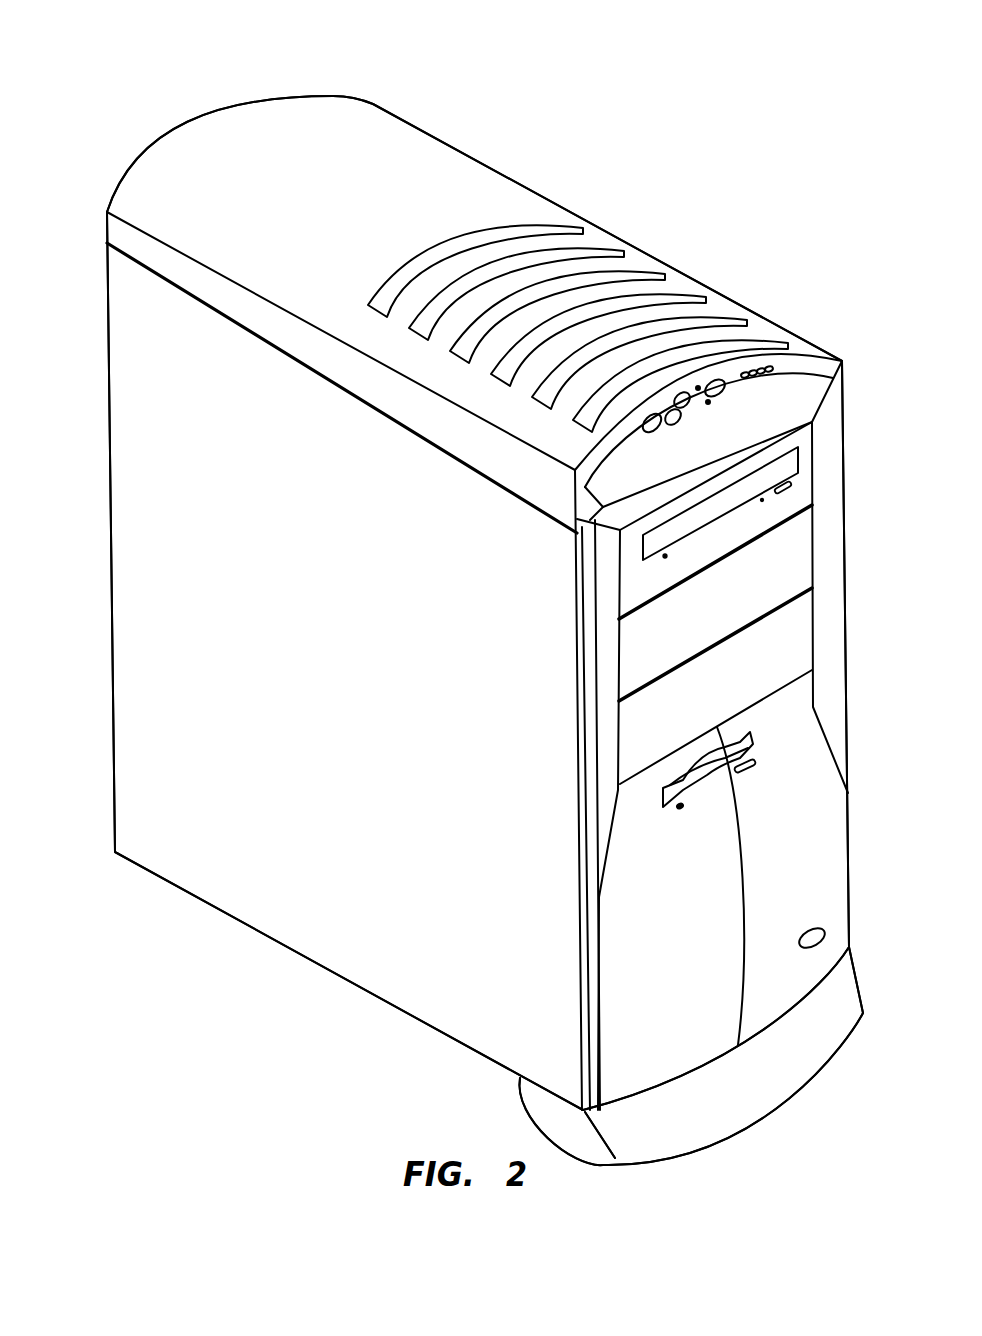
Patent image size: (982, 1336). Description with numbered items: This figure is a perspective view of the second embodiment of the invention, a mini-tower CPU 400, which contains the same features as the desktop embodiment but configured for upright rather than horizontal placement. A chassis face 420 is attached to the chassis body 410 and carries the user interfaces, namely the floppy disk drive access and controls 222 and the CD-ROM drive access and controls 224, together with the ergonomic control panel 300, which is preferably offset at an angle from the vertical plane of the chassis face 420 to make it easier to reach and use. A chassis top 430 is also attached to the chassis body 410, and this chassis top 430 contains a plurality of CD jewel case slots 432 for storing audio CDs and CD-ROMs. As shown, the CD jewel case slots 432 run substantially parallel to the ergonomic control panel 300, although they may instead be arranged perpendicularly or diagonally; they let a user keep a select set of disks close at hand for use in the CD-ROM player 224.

The mini-tower CPU 400 is at (445, 589).
The chassis top 430 is at (300, 200).
The CD jewel case slots 432 is at (557, 228).
The chassis body 410 is at (214, 422).
The ergonomic control panel 300 is at (812, 362).
The CD-ROM drive access and controls 224 is at (710, 532).
The floppy disk drive access and controls 222 is at (698, 792).
The chassis face 420 is at (693, 976).